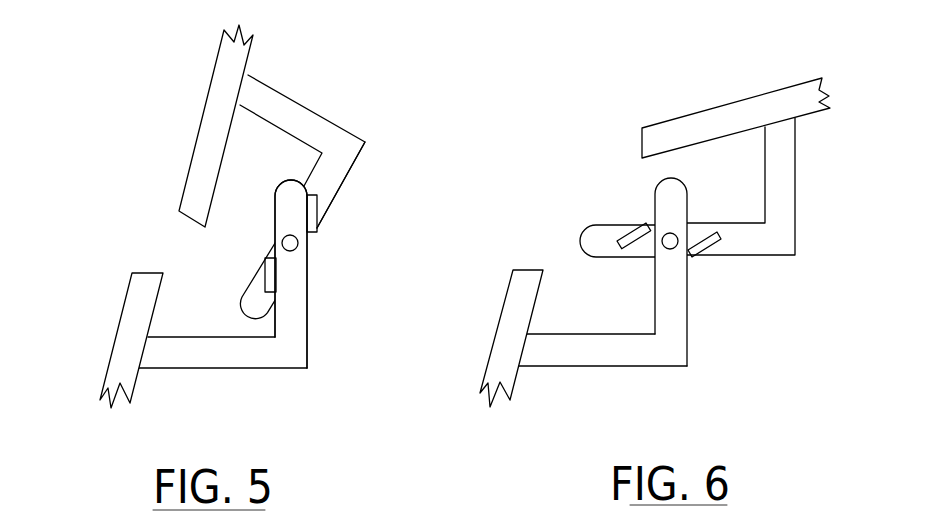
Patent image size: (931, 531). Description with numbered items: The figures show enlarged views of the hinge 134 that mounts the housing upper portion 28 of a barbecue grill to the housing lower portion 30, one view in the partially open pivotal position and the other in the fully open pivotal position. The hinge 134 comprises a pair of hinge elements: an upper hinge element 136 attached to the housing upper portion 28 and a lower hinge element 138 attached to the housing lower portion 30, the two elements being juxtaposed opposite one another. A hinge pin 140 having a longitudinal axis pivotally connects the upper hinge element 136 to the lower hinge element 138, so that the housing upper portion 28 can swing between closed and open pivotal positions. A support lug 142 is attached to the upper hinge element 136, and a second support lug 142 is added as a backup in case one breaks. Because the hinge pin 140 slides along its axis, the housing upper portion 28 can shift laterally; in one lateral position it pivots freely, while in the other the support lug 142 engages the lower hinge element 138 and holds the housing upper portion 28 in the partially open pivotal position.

In FIG. 5, the housing upper portion 28 is at (210, 85).
In FIG. 6, the housing upper portion 28 is at (725, 105).
In FIG. 5, the housing lower portion 30 is at (127, 292).
In FIG. 6, the housing lower portion 30 is at (485, 372).
In FIG. 5, the hinge 134 is at (292, 100).
In FIG. 6, the hinge 134 is at (625, 367).
In FIG. 5, the upper hinge element 136 is at (355, 167).
In FIG. 6, the upper hinge element 136 is at (795, 178).
In FIG. 5, the lower hinge element 138 is at (307, 317).
In FIG. 6, the lower hinge element 138 is at (688, 325).
In FIG. 5, the hinge pin 140 is at (305, 243).
In FIG. 6, the hinge pin 140 is at (665, 247).
In FIG. 5, the support lug 142 is at (317, 212).
In FIG. 6, the support lug 142 is at (633, 228).